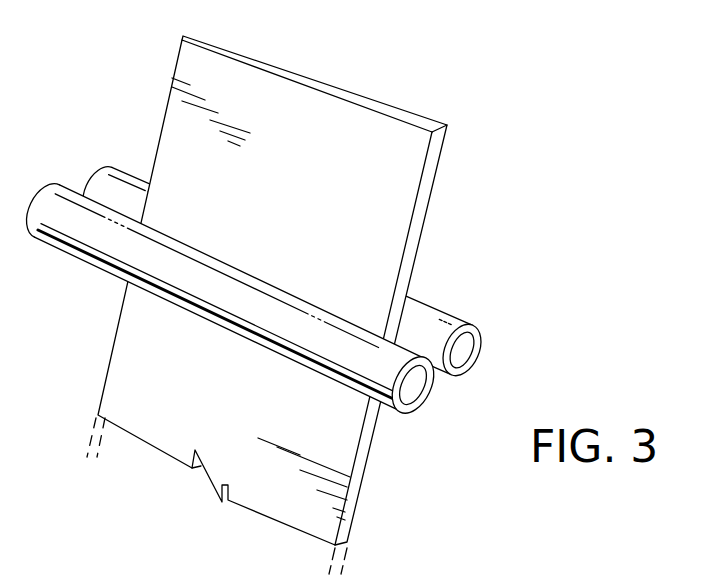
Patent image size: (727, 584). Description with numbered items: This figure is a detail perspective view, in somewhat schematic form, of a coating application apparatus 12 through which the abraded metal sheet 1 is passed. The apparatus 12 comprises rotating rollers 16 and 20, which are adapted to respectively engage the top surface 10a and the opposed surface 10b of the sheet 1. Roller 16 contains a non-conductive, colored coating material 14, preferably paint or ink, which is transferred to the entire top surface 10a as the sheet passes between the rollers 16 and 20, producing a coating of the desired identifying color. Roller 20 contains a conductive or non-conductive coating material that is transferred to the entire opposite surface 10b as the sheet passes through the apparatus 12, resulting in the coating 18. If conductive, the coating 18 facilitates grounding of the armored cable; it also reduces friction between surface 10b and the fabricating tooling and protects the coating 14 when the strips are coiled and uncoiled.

The metal sheet 1 is at (309, 305).
The top surface 10a is at (336, 206).
The opposed surface 10b is at (387, 56).
The coating application apparatus 12 is at (285, 298).
The coating material 14 is at (249, 312).
The roller 16 is at (417, 397).
The coating 18 is at (314, 270).
The roller 20 is at (480, 342).